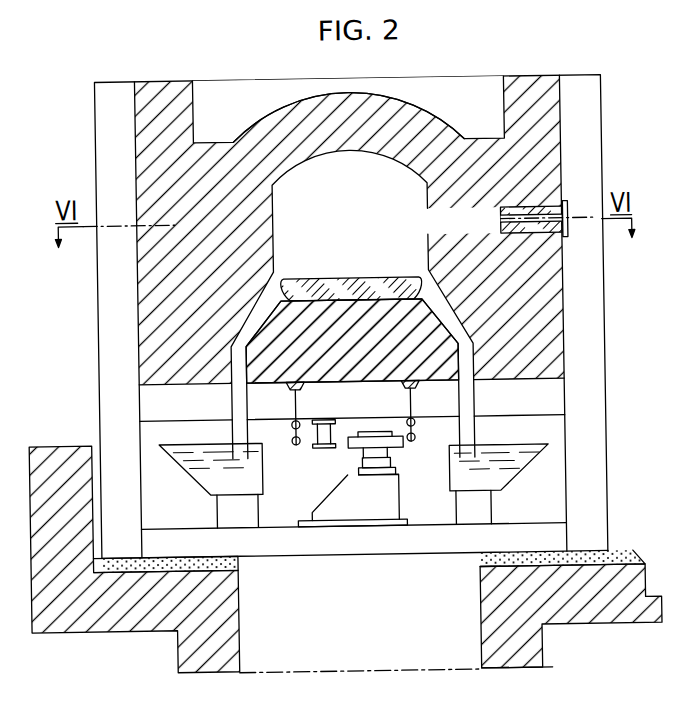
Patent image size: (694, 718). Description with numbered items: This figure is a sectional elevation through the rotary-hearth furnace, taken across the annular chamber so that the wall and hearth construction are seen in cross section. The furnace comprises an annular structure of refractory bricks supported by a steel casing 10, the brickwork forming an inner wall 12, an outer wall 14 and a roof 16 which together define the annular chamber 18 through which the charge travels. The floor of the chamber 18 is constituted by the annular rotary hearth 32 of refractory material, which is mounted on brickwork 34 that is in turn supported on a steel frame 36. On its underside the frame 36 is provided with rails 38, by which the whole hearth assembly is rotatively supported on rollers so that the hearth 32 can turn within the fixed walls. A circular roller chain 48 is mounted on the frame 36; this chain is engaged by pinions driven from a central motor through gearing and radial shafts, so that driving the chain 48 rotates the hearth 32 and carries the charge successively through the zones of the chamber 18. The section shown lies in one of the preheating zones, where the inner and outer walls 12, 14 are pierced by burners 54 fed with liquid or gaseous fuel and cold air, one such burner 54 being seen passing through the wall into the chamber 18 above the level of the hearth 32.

The steel casing 10 is at (139, 303).
The inner wall 12 is at (555, 281).
The outer wall 14 is at (155, 254).
The roof 16 is at (414, 116).
The annular chamber 18 is at (369, 225).
The annular rotary hearth 32 is at (346, 278).
The brickwork 34 is at (374, 359).
The steel frame 36 is at (372, 415).
The rails 38 is at (294, 445).
The circular roller chain 48 is at (322, 448).
The burners 54 is at (551, 210).